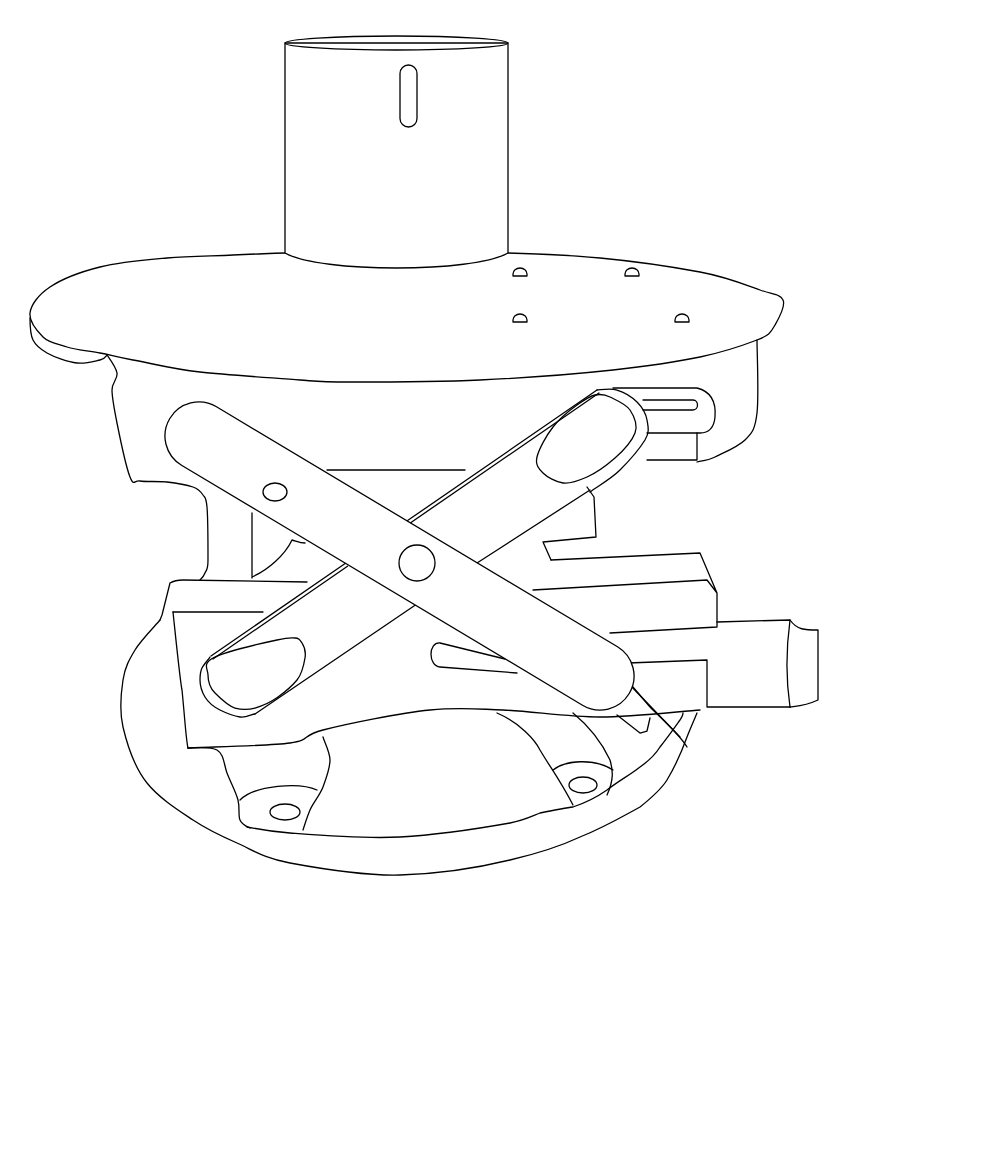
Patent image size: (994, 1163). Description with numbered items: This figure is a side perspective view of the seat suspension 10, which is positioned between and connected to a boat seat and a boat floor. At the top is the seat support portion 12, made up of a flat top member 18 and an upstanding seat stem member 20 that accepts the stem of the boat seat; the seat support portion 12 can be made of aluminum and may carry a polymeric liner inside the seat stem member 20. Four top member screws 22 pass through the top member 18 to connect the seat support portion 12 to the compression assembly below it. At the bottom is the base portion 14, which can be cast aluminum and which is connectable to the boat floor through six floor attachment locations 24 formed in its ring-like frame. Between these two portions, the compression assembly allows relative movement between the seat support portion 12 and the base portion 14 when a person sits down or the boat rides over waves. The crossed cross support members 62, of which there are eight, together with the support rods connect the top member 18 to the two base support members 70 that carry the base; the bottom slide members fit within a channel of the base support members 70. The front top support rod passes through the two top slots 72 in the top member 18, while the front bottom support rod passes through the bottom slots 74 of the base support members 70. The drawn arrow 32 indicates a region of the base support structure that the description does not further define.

The seat suspension 10 is at (667, 66).
The seat support portion 12 is at (636, 220).
The base portion 14 is at (595, 862).
The top member 18 is at (170, 283).
The seat stem member 20 is at (483, 155).
The top member screws 22 is at (680, 310).
The floor attachment locations 24 is at (250, 828).
The drive tube 32 is at (768, 733).
The cross support members 62 is at (687, 747).
The base support members 70 is at (597, 521).
The top slots 72 is at (703, 463).
The bottom slots 74 is at (697, 640).